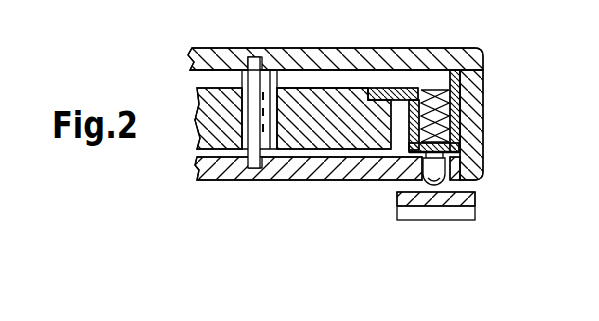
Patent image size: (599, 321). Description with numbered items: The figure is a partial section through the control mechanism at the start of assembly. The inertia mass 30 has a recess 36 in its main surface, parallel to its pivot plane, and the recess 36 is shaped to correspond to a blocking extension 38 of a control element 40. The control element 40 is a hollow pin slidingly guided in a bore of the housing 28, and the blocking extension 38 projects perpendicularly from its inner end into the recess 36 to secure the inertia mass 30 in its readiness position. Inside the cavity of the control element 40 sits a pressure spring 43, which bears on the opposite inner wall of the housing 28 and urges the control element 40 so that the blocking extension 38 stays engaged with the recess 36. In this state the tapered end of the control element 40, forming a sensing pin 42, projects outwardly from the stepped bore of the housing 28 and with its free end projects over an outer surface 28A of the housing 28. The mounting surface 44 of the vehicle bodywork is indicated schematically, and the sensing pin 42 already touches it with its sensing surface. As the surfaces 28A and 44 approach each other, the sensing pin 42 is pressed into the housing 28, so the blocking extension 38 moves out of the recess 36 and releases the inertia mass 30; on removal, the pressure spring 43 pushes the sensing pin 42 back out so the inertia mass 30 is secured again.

The housing 28 is at (228, 58).
The outer surface of the housing 28A is at (347, 179).
The inertia mass 30 is at (323, 130).
The recess 36 is at (352, 88).
The blocking extension 38 is at (398, 88).
The control element 40 is at (483, 136).
The sensing pin 42 is at (481, 173).
The pressure spring 43 is at (446, 84).
The mounting surface 44 is at (472, 187).